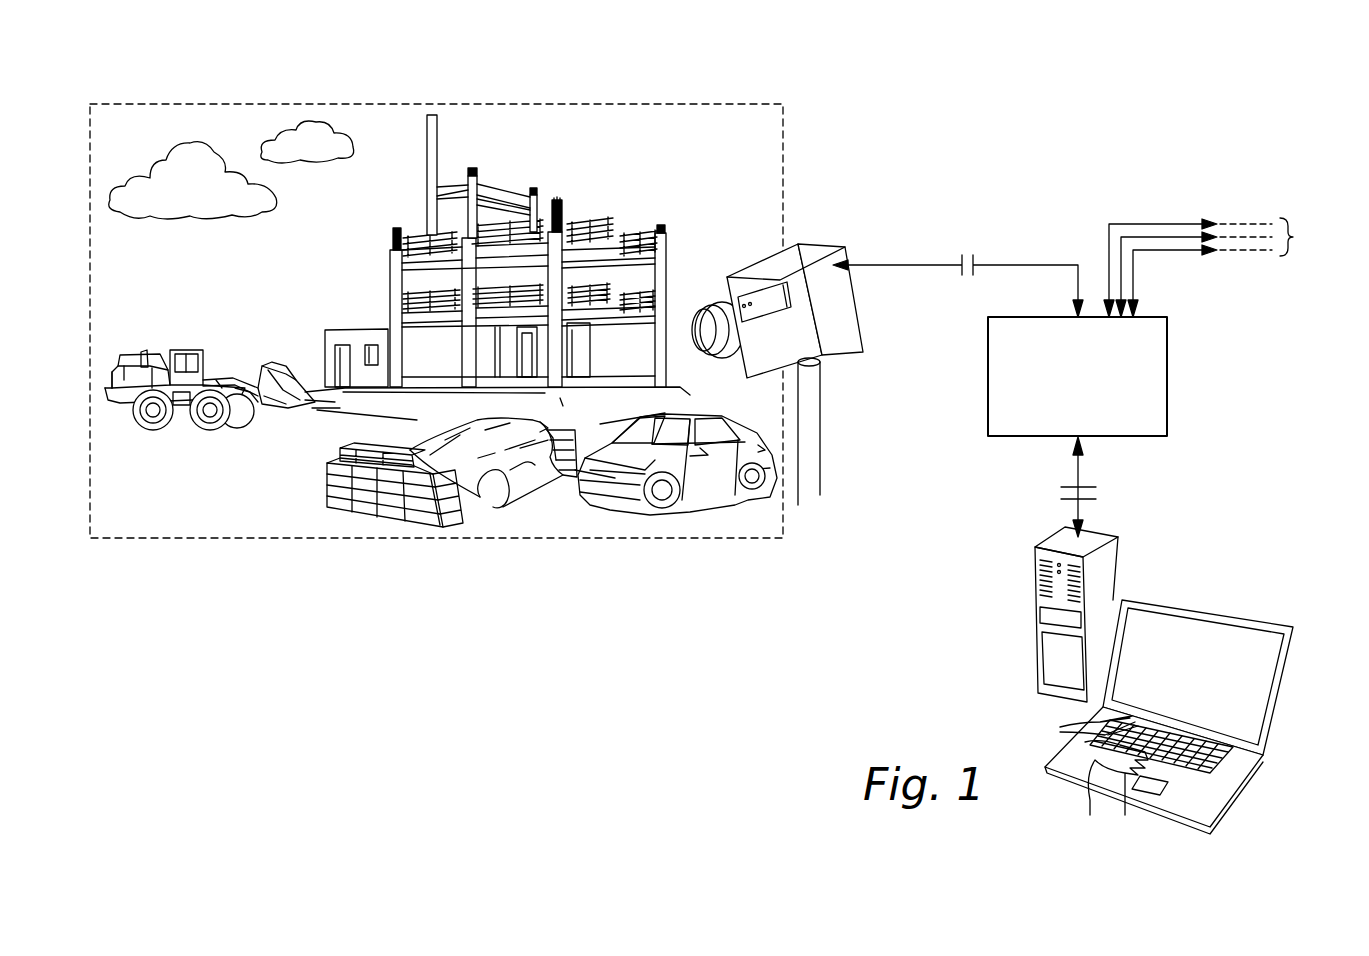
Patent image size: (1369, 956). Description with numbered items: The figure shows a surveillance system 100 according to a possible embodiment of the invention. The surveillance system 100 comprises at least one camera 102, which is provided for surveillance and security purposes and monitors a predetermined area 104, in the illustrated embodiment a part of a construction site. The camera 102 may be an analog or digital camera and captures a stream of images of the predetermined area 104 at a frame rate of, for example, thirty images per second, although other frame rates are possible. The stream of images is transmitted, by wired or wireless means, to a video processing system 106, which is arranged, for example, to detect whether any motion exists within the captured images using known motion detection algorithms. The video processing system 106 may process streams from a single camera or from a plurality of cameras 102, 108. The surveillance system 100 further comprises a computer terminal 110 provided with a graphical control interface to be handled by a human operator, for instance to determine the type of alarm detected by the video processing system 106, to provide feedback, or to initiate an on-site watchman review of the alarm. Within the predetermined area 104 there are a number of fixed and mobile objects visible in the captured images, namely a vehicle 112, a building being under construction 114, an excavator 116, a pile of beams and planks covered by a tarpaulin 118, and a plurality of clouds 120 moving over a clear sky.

The surveillance system 100 is at (1050, 86).
The camera 102 is at (765, 257).
The predetermined area 104 is at (660, 104).
The video processing system 106 is at (1167, 375).
The cameras 108 is at (1219, 267).
The computer terminal 110 is at (1222, 505).
The vehicle 112 is at (705, 460).
The building being under construction 114 is at (493, 183).
The excavator 116 is at (187, 345).
The pile of beams and planks covered by a tarpaulin 118 is at (503, 475).
The clouds 120 is at (195, 152).